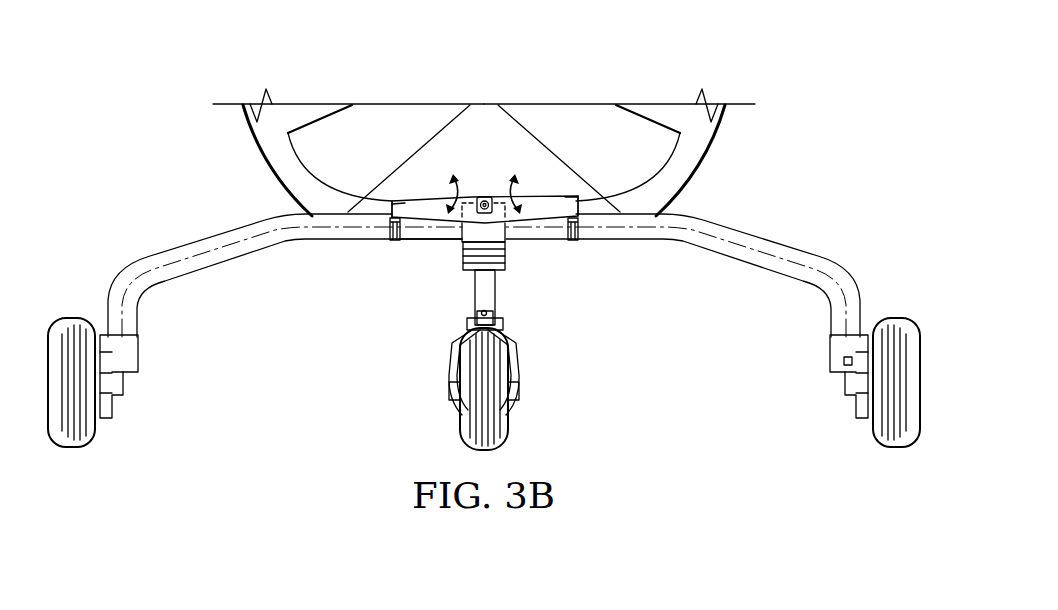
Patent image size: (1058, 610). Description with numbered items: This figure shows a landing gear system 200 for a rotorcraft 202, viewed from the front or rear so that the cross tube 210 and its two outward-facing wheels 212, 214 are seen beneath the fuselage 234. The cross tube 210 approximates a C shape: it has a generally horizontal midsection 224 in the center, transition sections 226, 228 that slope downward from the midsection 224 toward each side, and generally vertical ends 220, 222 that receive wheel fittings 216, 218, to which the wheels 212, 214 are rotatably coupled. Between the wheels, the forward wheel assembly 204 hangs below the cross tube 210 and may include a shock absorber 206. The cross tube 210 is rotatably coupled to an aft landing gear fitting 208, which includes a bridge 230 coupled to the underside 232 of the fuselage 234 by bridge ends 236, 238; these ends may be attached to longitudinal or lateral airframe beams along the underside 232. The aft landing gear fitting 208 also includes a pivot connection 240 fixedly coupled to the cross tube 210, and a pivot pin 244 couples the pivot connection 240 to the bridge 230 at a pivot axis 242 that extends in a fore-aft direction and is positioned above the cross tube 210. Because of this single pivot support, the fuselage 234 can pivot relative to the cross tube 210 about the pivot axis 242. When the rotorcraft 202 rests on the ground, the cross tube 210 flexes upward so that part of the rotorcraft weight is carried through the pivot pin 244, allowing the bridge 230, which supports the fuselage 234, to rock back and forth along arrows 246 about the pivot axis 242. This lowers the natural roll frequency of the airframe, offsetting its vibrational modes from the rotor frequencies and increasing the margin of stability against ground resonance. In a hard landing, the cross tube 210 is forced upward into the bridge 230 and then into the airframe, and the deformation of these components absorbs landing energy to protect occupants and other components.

The landing gear system 200 is at (484, 276).
The rotorcraft 202 is at (442, 117).
The forward wheel assembly 204 is at (535, 360).
The shock absorber 206 is at (498, 288).
The aft landing gear fitting 208 is at (400, 242).
The cross tube 210 is at (484, 261).
The wheel 212 is at (72, 447).
The wheel 214 is at (898, 447).
The wheel fitting 216 is at (137, 362).
The wheel fitting 218 is at (831, 362).
The end of cross tube 220 is at (137, 328).
The end of cross tube 222 is at (831, 328).
The midsection 224 is at (448, 242).
The transition section 226 is at (217, 232).
The transition section 228 is at (484, 261).
The bridge 230 is at (481, 172).
The underside 232 is at (637, 214).
The fuselage 234 is at (720, 123).
The bridge end 236 is at (388, 205).
The bridge end 238 is at (580, 212).
The pivot connection 240 is at (513, 231).
The pivot axis 242 is at (526, 131).
The pivot pin 244 is at (483, 196).
The arrows 246 is at (452, 190).